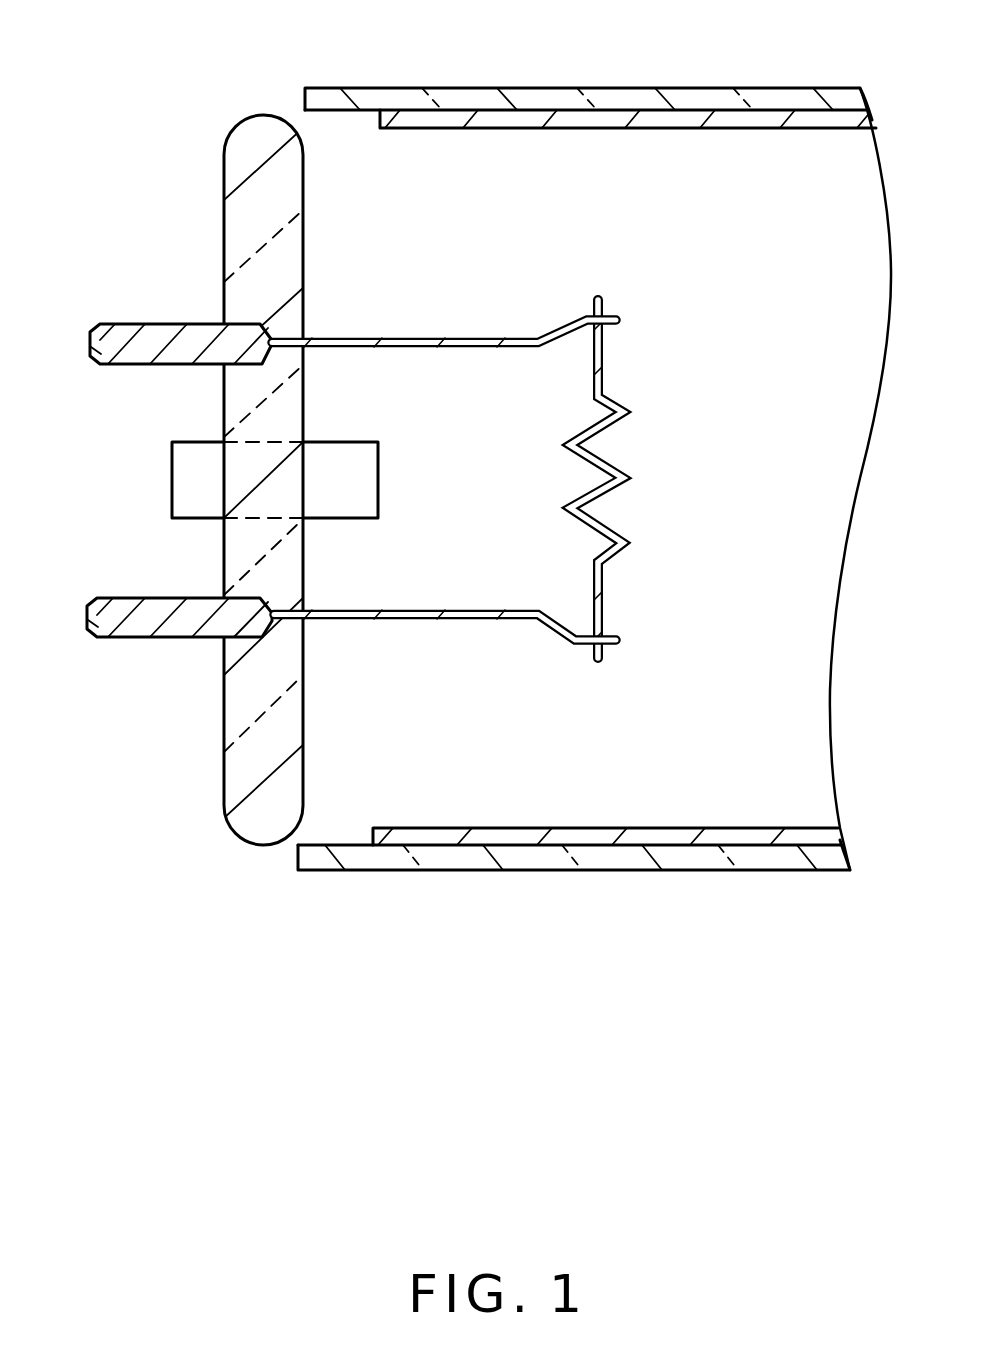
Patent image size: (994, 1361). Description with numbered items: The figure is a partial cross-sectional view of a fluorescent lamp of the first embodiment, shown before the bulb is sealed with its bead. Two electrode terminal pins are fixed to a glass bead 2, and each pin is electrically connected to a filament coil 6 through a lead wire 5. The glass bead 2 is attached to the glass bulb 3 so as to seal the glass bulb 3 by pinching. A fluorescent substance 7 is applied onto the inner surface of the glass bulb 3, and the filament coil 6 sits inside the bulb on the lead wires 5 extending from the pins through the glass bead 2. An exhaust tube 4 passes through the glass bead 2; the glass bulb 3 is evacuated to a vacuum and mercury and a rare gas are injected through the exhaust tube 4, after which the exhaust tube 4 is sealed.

The glass bead 2 is at (248, 190).
The glass bulb 3 is at (619, 100).
The exhaust tube 4 is at (340, 446).
The lead wire 5 is at (410, 338).
The filament coil 6 is at (605, 383).
The fluorescent substance 7 is at (678, 122).